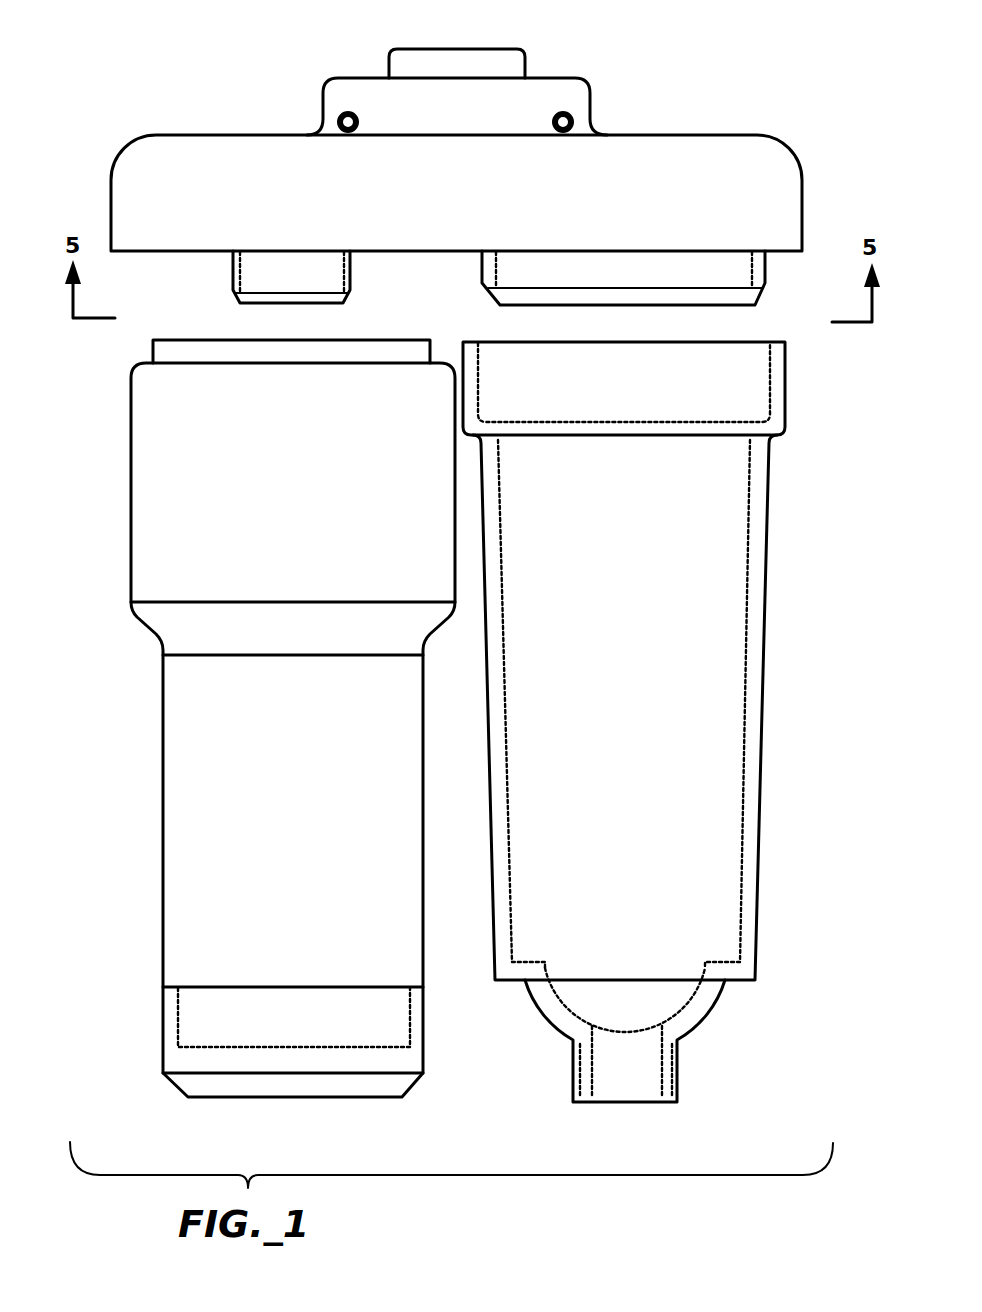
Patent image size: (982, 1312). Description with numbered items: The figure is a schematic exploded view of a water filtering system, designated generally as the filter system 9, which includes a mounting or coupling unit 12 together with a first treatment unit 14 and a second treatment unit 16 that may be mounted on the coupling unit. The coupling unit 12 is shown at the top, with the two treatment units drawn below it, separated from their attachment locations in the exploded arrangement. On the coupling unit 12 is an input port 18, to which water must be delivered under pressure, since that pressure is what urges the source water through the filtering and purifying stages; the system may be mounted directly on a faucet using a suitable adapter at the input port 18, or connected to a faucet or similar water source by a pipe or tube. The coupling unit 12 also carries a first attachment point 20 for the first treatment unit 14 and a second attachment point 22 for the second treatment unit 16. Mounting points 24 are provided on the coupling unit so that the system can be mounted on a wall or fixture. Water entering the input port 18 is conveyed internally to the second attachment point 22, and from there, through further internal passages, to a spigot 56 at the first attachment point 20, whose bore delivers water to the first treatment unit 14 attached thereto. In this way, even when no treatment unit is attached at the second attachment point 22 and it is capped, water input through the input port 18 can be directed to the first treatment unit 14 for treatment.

The filter system 9 is at (803, 720).
The coupling unit 12 is at (738, 118).
The first treatment unit 14 is at (145, 808).
The second treatment unit 16 is at (782, 546).
The input port 18 is at (538, 55).
The first attachment point 20 is at (208, 262).
The second attachment point 22 is at (757, 270).
The mounting points 24 is at (338, 118).
The spigot 56 is at (240, 282).